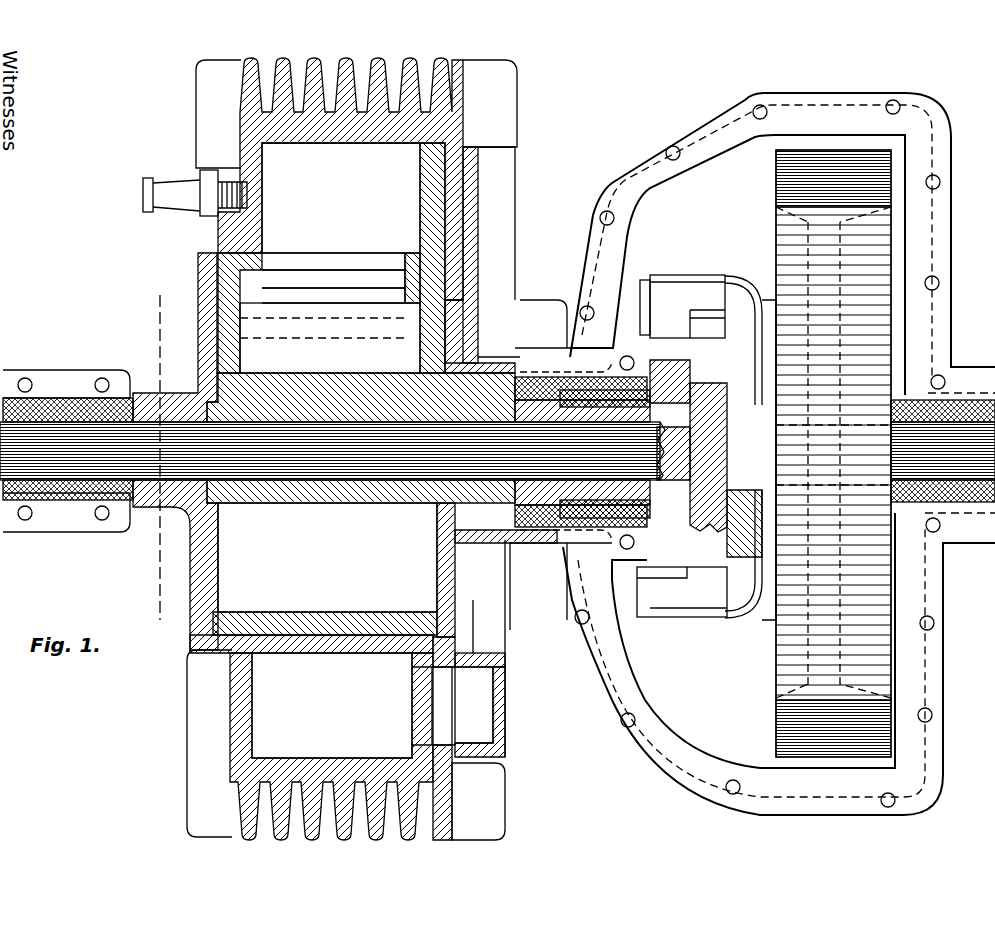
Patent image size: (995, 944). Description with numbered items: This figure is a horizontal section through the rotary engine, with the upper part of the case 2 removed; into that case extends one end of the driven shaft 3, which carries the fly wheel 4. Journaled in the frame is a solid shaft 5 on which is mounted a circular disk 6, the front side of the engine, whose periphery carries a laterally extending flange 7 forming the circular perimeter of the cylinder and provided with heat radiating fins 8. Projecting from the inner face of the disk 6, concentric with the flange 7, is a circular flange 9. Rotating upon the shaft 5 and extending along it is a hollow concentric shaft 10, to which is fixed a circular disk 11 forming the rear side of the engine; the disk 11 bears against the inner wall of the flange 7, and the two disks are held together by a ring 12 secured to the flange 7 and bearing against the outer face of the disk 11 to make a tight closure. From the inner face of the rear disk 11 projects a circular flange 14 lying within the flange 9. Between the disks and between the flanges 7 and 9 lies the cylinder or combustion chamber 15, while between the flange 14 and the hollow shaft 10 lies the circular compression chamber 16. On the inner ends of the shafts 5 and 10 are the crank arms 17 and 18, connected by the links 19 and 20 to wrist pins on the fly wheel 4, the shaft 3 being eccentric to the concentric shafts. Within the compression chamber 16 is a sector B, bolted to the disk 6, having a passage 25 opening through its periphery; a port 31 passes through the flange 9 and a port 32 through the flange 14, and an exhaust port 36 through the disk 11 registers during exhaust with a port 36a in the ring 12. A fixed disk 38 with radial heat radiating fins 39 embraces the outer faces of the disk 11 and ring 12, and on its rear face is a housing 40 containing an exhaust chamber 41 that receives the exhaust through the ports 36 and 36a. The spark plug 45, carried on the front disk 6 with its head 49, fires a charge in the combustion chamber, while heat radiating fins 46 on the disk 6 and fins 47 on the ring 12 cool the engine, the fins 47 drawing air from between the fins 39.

The case 2 is at (682, 142).
The driven shaft 3 is at (976, 405).
The fly wheel 4 is at (765, 713).
The solid shaft 5 is at (58, 422).
The circular disk 6 is at (218, 556).
The laterally extending flange 7 is at (355, 148).
The heat radiating fins 8 is at (310, 68).
The circular flange 9 is at (342, 260).
The hollow concentric shaft 10 is at (323, 505).
The circular disk 11 is at (413, 685).
The ring 12 is at (452, 800).
The circular flange 14 is at (375, 262).
The cylinder or combustion chamber 15 is at (341, 198).
The circular compression chamber 16 is at (327, 557).
The crank arm 17 is at (678, 617).
The crank arm 18 is at (643, 403).
The link 19 is at (745, 618).
The link 20 is at (745, 277).
The passage 25 is at (330, 338).
The port 31 is at (280, 253).
The port 32 is at (310, 275).
The exhaust port 36 is at (418, 716).
The port 36a is at (445, 731).
The fixed disk 38 is at (473, 607).
The heat radiating fins 39 is at (505, 641).
The housing 40 is at (505, 677).
The exhaust chamber 41 is at (490, 705).
The spark plug 45 is at (200, 212).
The heat radiating fins 46 is at (196, 70).
The fins 47 is at (517, 102).
The head 49 is at (143, 190).
The sector B is at (410, 357).